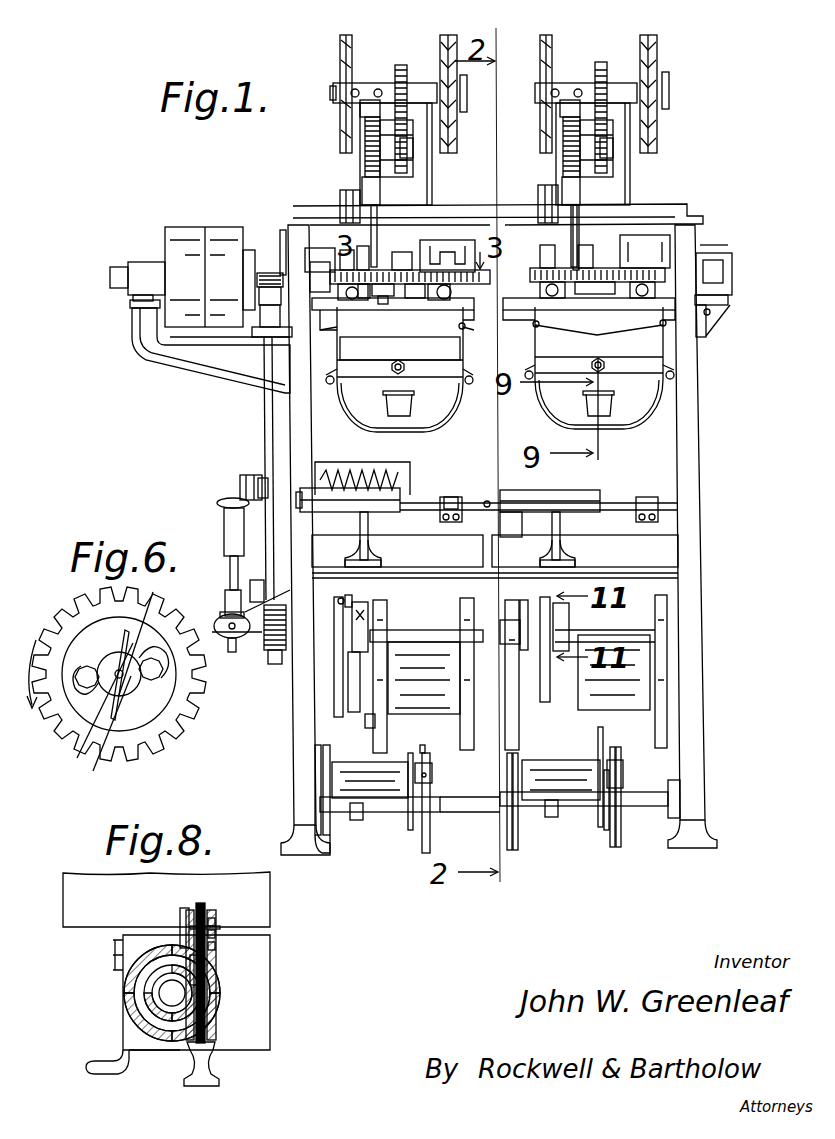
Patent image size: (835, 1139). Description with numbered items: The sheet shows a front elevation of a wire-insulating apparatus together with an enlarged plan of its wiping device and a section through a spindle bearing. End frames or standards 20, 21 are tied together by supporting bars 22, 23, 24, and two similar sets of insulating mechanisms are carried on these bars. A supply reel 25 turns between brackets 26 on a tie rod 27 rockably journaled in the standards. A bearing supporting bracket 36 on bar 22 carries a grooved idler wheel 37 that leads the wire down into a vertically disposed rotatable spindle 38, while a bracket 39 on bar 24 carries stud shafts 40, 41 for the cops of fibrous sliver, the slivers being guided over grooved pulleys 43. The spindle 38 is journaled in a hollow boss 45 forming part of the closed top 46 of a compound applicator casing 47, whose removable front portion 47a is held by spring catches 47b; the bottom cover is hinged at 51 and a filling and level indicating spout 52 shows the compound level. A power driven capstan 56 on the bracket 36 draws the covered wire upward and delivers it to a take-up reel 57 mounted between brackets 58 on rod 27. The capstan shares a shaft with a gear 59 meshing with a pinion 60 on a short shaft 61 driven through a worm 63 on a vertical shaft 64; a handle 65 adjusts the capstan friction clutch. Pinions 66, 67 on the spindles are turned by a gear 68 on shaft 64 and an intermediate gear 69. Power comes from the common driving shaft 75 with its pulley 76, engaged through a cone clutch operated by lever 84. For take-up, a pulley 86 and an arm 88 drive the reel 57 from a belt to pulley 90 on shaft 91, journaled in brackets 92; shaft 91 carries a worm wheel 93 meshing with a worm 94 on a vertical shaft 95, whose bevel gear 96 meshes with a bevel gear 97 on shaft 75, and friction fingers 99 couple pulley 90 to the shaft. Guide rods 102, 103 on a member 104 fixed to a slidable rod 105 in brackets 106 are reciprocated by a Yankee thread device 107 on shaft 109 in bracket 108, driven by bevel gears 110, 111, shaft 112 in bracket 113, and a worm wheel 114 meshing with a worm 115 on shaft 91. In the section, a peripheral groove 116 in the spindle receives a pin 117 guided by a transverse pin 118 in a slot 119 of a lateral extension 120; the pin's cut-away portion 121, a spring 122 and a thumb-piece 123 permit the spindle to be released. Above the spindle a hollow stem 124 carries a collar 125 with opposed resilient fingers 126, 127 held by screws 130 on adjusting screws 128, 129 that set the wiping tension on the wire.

In FIG. 1, the end frame or standard 20 is at (293, 740).
In FIG. 1, the end frame or standard 21 is at (690, 710).
In FIG. 1, the supporting bar 22 is at (664, 206).
In FIG. 1, the supporting bar 23 is at (516, 313).
In FIG. 8, the supporting bar 23 is at (68, 905).
In FIG. 1, the supporting bar 24 is at (653, 560).
In FIG. 1, the wire supply reel 25 is at (338, 786).
In FIG. 1, the brackets 26 is at (322, 826).
In FIG. 1, the tie rod 27 is at (466, 812).
In FIG. 1, the bearing supporting bracket 36 is at (418, 190).
In FIG. 1, the grooved idler wheel 37 is at (340, 52).
In FIG. 8, the rotatable spindle 38 is at (158, 990).
In FIG. 1, the bracket 39 is at (360, 556).
In FIG. 1, the stud shaft 40 is at (328, 490).
In FIG. 1, the stud shaft 41 is at (386, 520).
In FIG. 1, the grooved pulley 43 is at (345, 196).
In FIG. 8, the hollow boss 45 is at (178, 1040).
In FIG. 8, the closed top 46 is at (262, 1022).
In FIG. 1, the compound applicator casing 47 is at (456, 366).
In FIG. 1, the removable portion 47a is at (447, 343).
In FIG. 8, the removable portion 47a is at (154, 1052).
In FIG. 1, the spring catches 47b is at (460, 329).
In FIG. 8, the spring catches 47b is at (122, 1050).
In FIG. 1, the hinge 51 is at (326, 380).
In FIG. 1, the filling and level indicating spout 52 is at (410, 404).
In FIG. 1, the capstan 56 is at (445, 60).
In FIG. 1, the take-up reel 57 is at (437, 660).
In FIG. 1, the brackets 58 is at (483, 727).
In FIG. 1, the gear 59 is at (401, 72).
In FIG. 1, the pinion 60 is at (395, 165).
In FIG. 1, the short shaft 61 is at (413, 148).
In FIG. 1, the worm 63 is at (365, 162).
In FIG. 1, the vertical shaft 64 is at (377, 234).
In FIG. 1, the handle 65 is at (465, 108).
In FIG. 1, the pinion 66 is at (348, 272).
In FIG. 6, the pinion 66 is at (82, 600).
In FIG. 1, the pinion 67 is at (452, 292).
In FIG. 1, the gear 68 is at (343, 300).
In FIG. 1, the gear 69 is at (428, 300).
In FIG. 1, the common driving shaft 75 is at (258, 298).
In FIG. 1, the power driven pulley 76 is at (235, 281).
In FIG. 1, the lever 84 is at (398, 302).
In FIG. 1, the pulley 86 is at (334, 698).
In FIG. 1, the arm 88 is at (376, 721).
In FIG. 1, the pulley 90 is at (344, 600).
In FIG. 1, the shaft 91 is at (408, 642).
In FIG. 1, the brackets 92 is at (512, 645).
In FIG. 1, the worm wheel 93 is at (268, 652).
In FIG. 1, the worm 94 is at (277, 665).
In FIG. 1, the vertical shaft 95 is at (268, 462).
In FIG. 1, the bevel gear 96 is at (268, 272).
In FIG. 1, the bevel gear 97 is at (283, 232).
In FIG. 1, the friction fingers 99 is at (362, 646).
In FIG. 1, the guide rod 102 is at (443, 500).
In FIG. 1, the guide rod 103 is at (460, 502).
In FIG. 1, the member 104 is at (451, 497).
In FIG. 1, the slidable rod 105 is at (488, 500).
In FIG. 1, the brackets 106 is at (510, 525).
In FIG. 1, the Yankee thread device 107 is at (373, 474).
In FIG. 1, the bracket 108 is at (418, 470).
In FIG. 1, the shaft 109 is at (262, 482).
In FIG. 1, the bevel gear 110 is at (240, 482).
In FIG. 1, the bevel gear 111 is at (218, 503).
In FIG. 1, the shaft 112 is at (228, 562).
In FIG. 1, the bracket 113 is at (240, 585).
In FIG. 1, the worm wheel 114 is at (224, 618).
In FIG. 1, the worm 115 is at (232, 640).
In FIG. 8, the peripheral groove 116 is at (150, 1003).
In FIG. 8, the pin 117 is at (216, 1015).
In FIG. 8, the transverse pin 118 is at (208, 912).
In FIG. 8, the slot 119 is at (216, 924).
In FIG. 8, the lateral extension 120 is at (186, 926).
In FIG. 8, the cut-away portion 121 is at (215, 966).
In FIG. 8, the spring 122 is at (222, 935).
In FIG. 1, the thumb-piece 123 is at (362, 300).
In FIG. 8, the thumb-piece 123 is at (210, 1070).
In FIG. 6, the hollow stem 124 is at (180, 708).
In FIG. 6, the collar 125 is at (108, 735).
In FIG. 6, the resilient finger 126 is at (120, 650).
In FIG. 6, the resilient finger 127 is at (126, 686).
In FIG. 6, the screw 128 is at (76, 688).
In FIG. 6, the screw 129 is at (182, 682).
In FIG. 6, the screws 130 is at (122, 677).